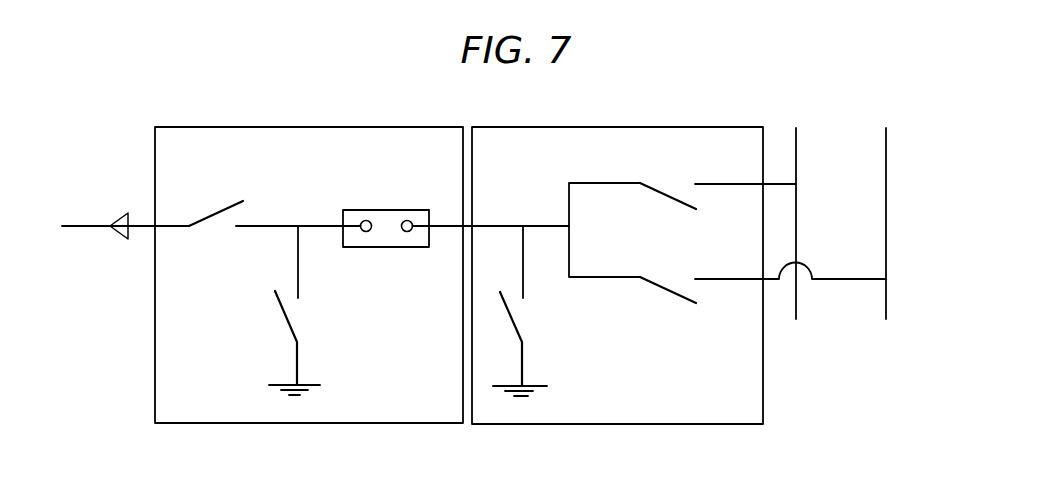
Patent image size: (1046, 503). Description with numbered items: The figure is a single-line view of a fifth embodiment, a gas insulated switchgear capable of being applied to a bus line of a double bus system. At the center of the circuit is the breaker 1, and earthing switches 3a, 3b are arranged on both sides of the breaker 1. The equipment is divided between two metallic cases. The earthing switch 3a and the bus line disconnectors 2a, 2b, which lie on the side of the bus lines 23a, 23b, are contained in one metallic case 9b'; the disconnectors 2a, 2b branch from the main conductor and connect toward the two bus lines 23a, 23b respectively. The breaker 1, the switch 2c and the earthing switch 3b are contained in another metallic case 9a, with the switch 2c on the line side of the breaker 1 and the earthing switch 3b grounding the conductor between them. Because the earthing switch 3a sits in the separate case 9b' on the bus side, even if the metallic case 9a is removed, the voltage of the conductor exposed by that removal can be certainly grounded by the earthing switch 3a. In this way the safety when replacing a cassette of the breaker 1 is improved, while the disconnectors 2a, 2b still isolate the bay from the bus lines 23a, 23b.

The breaker 1 is at (389, 210).
The bus line disconnector 2a is at (668, 197).
The bus line disconnector 2b is at (668, 290).
The switch 2c is at (218, 212).
The earthing switch 3a is at (513, 317).
The earthing switch 3b is at (290, 317).
The metallic case 9a is at (293, 423).
The metallic case 9b' is at (617, 305).
The bus line 23a is at (797, 140).
The bus line 23b is at (887, 140).